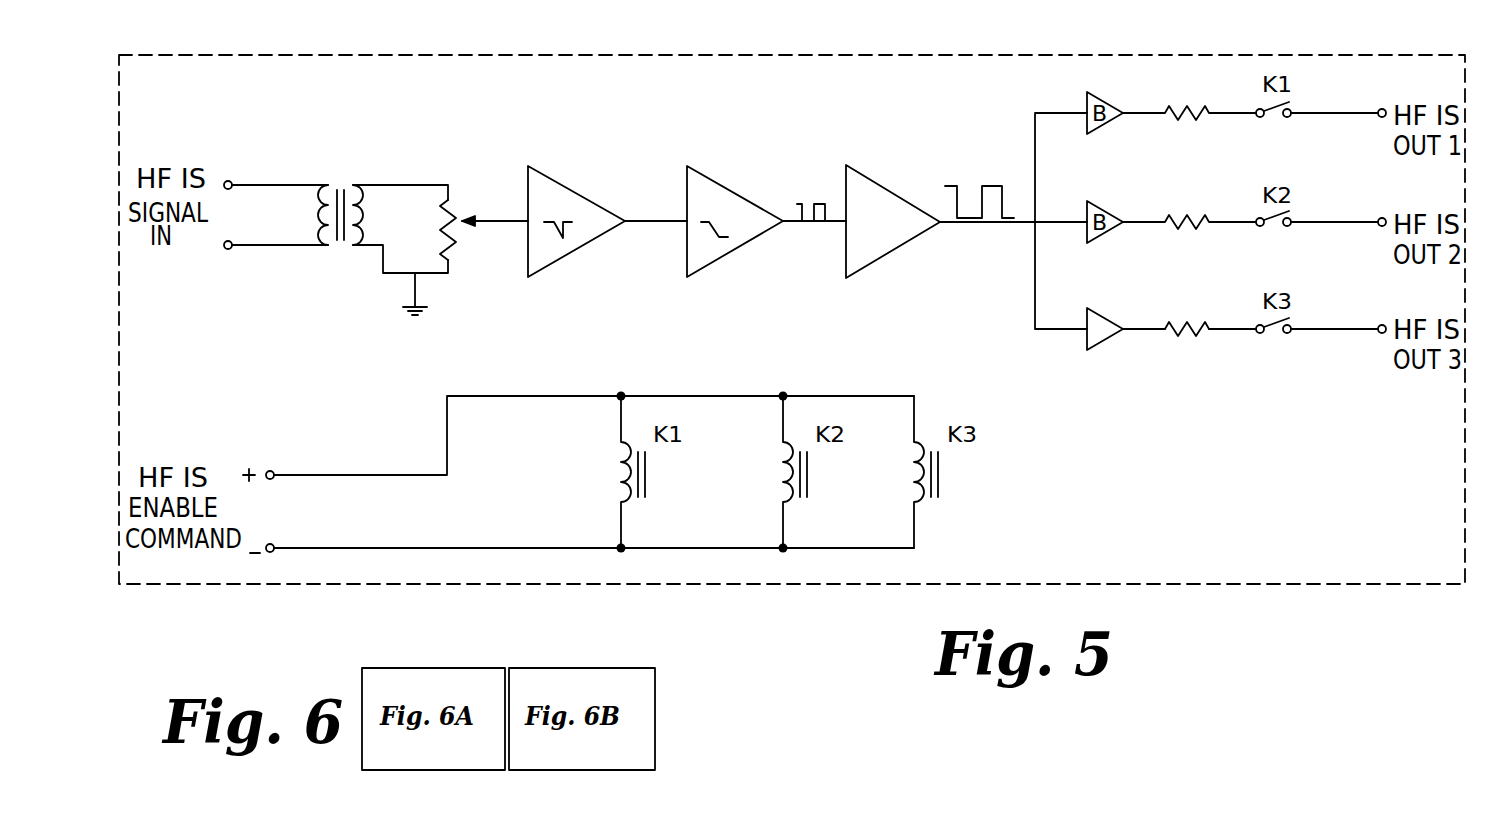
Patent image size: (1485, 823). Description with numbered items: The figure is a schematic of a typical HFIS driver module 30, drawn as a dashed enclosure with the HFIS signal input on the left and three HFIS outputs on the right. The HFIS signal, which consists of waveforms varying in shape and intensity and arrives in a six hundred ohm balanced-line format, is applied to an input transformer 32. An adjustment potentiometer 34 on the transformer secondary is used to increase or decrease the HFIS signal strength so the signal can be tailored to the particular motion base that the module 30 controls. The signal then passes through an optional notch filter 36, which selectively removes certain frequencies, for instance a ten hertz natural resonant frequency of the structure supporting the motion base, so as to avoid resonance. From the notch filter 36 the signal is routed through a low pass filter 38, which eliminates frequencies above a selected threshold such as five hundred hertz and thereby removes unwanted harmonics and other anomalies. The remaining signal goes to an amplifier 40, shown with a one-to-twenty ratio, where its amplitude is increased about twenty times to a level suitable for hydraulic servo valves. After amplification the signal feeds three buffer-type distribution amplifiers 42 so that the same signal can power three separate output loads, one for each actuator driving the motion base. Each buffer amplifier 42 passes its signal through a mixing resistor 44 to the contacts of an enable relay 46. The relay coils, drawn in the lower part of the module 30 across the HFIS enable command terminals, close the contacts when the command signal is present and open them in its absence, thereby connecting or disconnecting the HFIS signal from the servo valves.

The HFIS driver module 30 is at (1152, 594).
The input transformer 32 is at (323, 255).
The adjustment potentiometer 34 is at (452, 200).
The notch filter 36 is at (570, 186).
The low pass filter 38 is at (724, 188).
The amplifier 40 is at (867, 180).
The buffer-type distribution amplifier 42 is at (1110, 337).
The mixing resistor 44 is at (1195, 333).
The enable relay 46 is at (1273, 335).